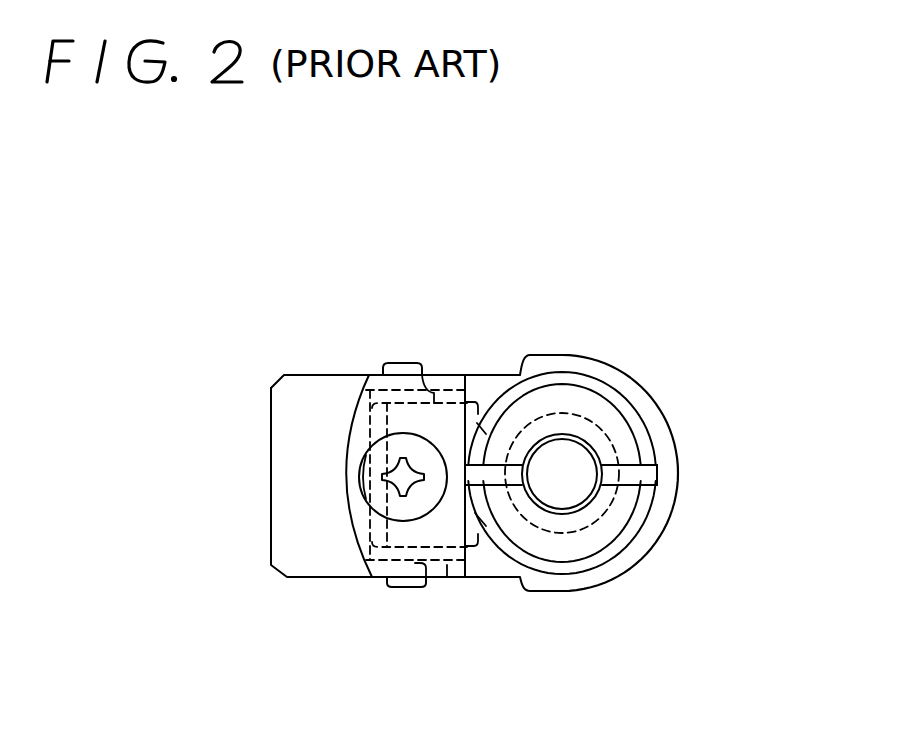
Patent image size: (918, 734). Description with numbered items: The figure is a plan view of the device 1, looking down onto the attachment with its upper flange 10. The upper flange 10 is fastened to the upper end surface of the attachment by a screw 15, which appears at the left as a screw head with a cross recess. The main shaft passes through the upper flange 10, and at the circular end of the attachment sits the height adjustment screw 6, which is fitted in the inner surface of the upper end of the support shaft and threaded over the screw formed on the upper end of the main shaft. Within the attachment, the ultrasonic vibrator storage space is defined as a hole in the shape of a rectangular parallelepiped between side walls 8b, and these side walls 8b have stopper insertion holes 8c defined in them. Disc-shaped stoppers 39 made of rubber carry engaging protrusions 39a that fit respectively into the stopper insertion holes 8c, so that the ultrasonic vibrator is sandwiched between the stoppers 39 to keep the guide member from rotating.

The prior art fastening device 1 is at (266, 475).
The height adjustment screw 6 is at (612, 428).
The side walls 8b is at (446, 385).
The stopper insertion holes 8c is at (414, 361).
The upper flange 10 is at (493, 381).
The screw 15 is at (390, 498).
The stoppers 39 is at (380, 365).
The engaging protrusions 39a is at (398, 362).